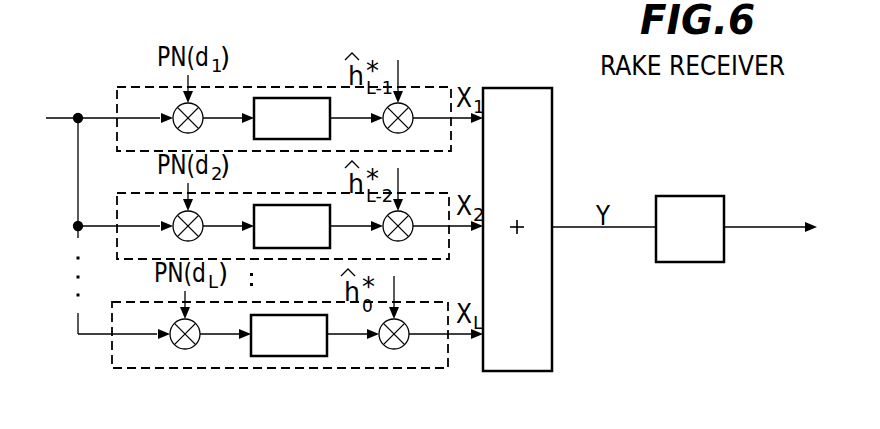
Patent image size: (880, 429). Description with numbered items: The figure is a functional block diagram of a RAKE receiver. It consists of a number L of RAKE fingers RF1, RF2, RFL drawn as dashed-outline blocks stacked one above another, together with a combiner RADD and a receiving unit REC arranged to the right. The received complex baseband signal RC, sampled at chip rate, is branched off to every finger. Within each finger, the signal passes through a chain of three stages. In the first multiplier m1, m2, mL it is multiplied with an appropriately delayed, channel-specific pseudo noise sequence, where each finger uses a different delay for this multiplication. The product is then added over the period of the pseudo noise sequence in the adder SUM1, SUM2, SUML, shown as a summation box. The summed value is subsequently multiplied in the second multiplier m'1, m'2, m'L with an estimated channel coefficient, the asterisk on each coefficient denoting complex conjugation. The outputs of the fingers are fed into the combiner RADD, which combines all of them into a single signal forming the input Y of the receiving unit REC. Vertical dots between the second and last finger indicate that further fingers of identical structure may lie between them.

The received complex baseband signal RC is at (90, 218).
The RAKE finger RF1 is at (441, 62).
The RAKE finger RF2 is at (441, 170).
The RAKE finger RFL is at (441, 278).
The first multiplier m1 is at (176, 128).
The first multiplier m2 is at (176, 236).
The first multiplier mL is at (173, 344).
The second multiplier m'1 is at (414, 127).
The second multiplier m'2 is at (414, 235).
The second multiplier m'L is at (409, 343).
The adder SUM1 is at (273, 98).
The adder SUM2 is at (273, 205).
The adder SUML is at (270, 315).
The combiner RADD is at (552, 361).
The receiving unit REC is at (690, 229).